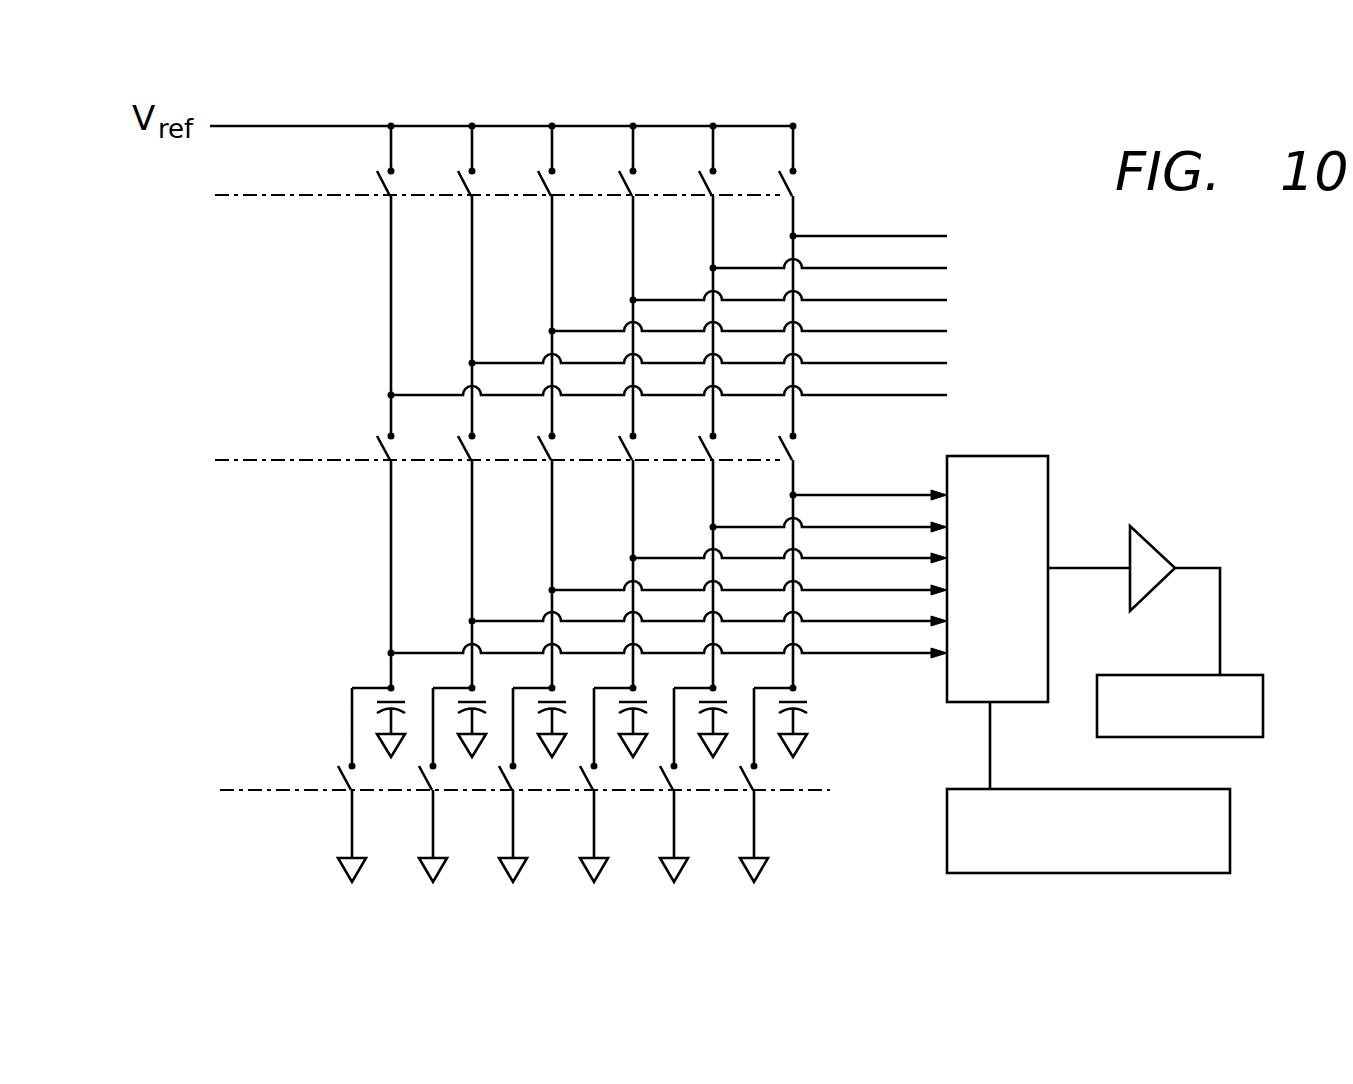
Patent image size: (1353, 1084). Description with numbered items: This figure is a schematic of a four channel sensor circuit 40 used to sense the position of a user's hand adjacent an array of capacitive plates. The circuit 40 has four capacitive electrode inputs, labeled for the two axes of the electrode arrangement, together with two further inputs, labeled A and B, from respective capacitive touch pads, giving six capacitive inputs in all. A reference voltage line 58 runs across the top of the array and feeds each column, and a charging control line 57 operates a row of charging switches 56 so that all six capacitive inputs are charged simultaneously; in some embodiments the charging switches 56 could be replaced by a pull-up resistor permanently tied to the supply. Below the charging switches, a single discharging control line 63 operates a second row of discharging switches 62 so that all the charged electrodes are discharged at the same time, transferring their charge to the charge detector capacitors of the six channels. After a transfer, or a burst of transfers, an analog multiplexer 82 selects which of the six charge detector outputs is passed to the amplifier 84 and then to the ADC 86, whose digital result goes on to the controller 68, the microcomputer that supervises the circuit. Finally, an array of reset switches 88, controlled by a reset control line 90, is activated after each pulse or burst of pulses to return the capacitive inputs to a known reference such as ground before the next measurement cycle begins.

The sensor circuit 40 is at (268, 364).
The charging switch 56 is at (633, 196).
The charging control line 57 is at (280, 197).
The reference voltage line 58 is at (345, 127).
The second row switches 62 is at (633, 460).
The discharging control line 63 is at (297, 461).
The controller 68 is at (1122, 848).
The analog multiplexer 82 is at (1018, 596).
The amplifier 84 is at (1158, 545).
The ADC 86 is at (1205, 729).
The reset switches 88 is at (557, 853).
The reset control line 90 is at (293, 790).